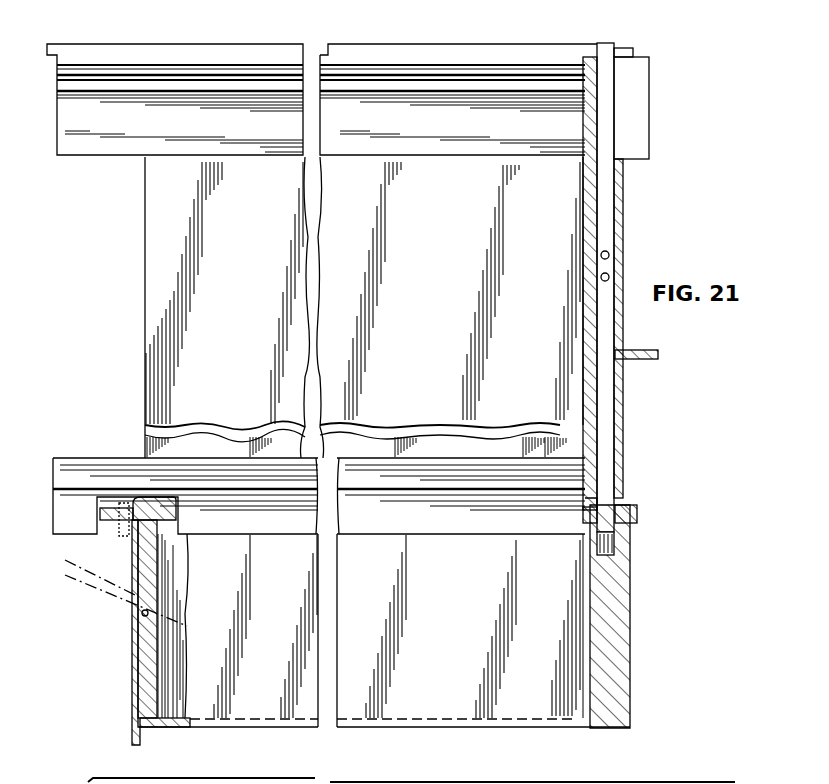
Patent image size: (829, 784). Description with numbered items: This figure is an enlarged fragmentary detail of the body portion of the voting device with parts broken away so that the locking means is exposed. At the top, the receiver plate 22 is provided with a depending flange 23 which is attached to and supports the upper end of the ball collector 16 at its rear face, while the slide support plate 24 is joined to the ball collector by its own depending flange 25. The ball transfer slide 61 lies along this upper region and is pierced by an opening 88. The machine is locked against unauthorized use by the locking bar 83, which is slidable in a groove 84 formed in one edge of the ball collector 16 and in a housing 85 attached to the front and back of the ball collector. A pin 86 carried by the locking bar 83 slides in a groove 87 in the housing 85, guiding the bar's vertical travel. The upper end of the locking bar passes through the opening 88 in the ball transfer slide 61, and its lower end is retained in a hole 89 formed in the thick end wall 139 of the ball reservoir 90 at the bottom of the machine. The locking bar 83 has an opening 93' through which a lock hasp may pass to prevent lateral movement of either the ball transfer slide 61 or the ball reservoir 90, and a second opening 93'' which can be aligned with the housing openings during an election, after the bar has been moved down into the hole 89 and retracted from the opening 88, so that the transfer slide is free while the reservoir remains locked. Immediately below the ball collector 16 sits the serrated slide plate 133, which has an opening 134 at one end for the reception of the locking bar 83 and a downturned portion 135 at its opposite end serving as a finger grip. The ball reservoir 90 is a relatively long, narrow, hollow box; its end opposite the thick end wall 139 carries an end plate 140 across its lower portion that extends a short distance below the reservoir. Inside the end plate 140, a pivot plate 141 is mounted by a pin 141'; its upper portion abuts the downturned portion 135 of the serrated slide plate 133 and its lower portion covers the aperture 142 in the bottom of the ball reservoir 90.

The ball transfer slide 61 is at (478, 36).
The opening 88 is at (616, 49).
The depending flange 23 is at (636, 98).
The slide support plate 24 is at (63, 86).
The depending flange 25 is at (112, 152).
The ball collector 16 is at (158, 287).
The second opening 93'' is at (634, 245).
The opening 93' is at (580, 277).
The groove 84 is at (600, 331).
The pin 86 is at (650, 352).
The groove 87 is at (624, 376).
The locking bar 83 is at (606, 394).
The housing 85 is at (623, 444).
The receiver plate 22 is at (70, 495).
The opening 134 is at (590, 501).
The serrated slide plate 133 is at (588, 512).
The hole 89 is at (615, 551).
The thick end wall 139 is at (620, 610).
The downturned portion 135 is at (128, 534).
The pivot plate 141 is at (182, 607).
The pin 141' is at (126, 596).
The end plate 140 is at (133, 652).
The aperture 142 is at (146, 728).
The ball reservoir 90 is at (448, 712).